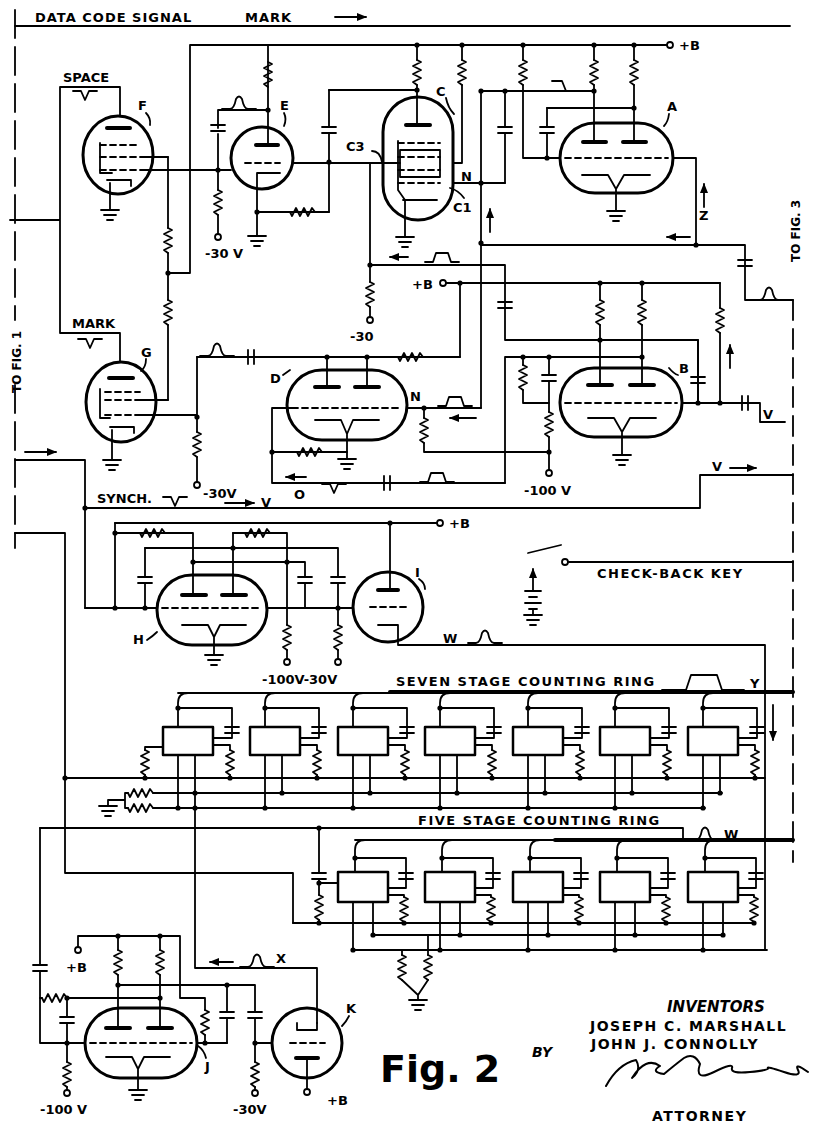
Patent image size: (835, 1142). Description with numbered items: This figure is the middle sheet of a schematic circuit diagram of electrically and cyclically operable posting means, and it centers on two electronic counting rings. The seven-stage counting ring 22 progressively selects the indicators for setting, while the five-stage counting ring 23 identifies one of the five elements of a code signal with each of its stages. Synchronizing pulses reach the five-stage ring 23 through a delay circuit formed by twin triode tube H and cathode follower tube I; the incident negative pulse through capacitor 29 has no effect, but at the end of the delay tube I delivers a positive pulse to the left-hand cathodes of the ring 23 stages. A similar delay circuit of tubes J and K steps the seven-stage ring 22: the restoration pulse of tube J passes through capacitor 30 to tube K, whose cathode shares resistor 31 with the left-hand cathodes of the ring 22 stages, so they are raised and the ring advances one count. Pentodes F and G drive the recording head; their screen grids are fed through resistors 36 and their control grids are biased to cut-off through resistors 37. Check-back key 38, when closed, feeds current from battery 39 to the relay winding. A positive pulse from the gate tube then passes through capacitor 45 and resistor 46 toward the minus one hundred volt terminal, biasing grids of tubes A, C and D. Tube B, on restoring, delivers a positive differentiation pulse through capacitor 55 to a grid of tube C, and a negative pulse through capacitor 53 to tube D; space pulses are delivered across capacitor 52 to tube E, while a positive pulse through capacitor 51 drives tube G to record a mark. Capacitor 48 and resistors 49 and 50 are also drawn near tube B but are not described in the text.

The 7-stage counting ring 22 is at (163, 726).
The 5-stage counting ring 23 is at (353, 871).
The capacitor 29 is at (342, 576).
The capacitor 30 is at (260, 1014).
The resistor 31 is at (158, 960).
The resistors 36 is at (168, 253).
The resistors 37 is at (220, 199).
The check-back key 38 is at (568, 543).
The battery 39 is at (557, 597).
The capacitor 45 is at (738, 262).
The resistor 46 is at (431, 431).
The coupling capacitor 48 is at (743, 416).
The resistor 49 is at (714, 326).
The cathode resistor 50 is at (553, 447).
The capacitor 51 is at (254, 356).
The capacitor 52 is at (326, 122).
The capacitor 53 is at (388, 479).
The capacitor 55 is at (510, 305).